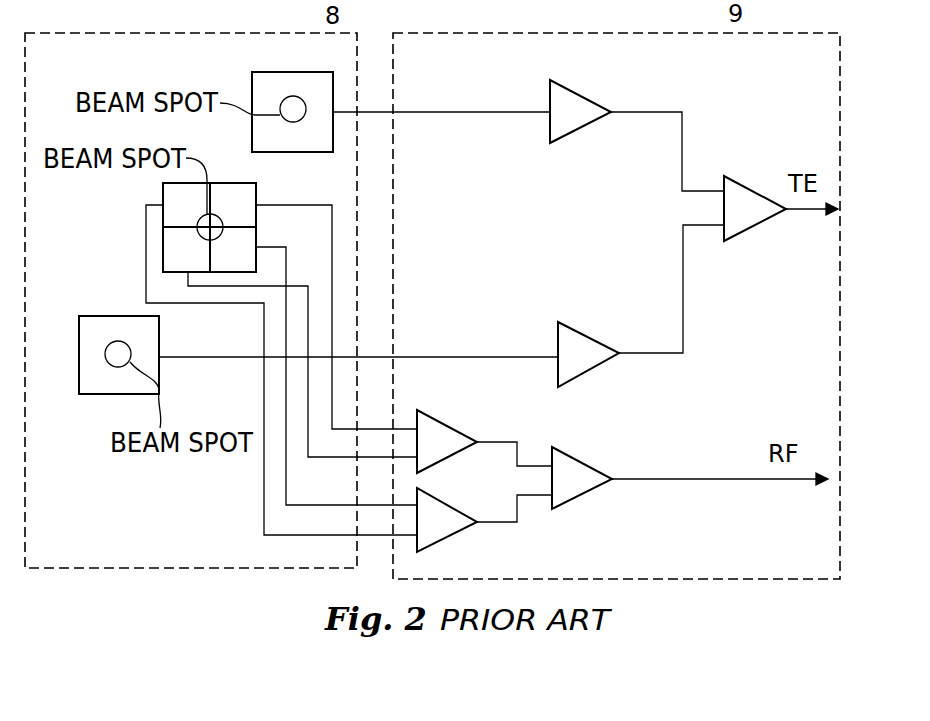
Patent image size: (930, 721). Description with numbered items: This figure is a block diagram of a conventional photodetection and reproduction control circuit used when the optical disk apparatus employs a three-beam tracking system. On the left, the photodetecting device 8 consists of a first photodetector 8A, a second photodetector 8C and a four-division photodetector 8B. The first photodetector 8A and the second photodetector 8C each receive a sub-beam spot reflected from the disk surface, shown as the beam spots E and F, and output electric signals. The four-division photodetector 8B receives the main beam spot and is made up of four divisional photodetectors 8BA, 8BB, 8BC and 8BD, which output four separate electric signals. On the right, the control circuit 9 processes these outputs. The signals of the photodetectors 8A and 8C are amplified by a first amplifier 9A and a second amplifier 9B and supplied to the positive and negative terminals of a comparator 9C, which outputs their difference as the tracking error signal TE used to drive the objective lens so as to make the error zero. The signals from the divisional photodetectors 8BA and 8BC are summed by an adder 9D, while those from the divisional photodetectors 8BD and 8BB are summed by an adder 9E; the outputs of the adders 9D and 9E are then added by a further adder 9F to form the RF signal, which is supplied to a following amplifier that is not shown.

The photodetecting device 8 is at (322, 11).
The photodetection and reproduction control circuit 9 is at (724, 10).
The first photodetector 8A is at (268, 72).
The 4-division photodetector 8B is at (196, 227).
The divisional photodetector 8BA is at (242, 181).
The divisional photodetector 8BB is at (168, 181).
The divisional photodetector 8BC is at (162, 250).
The divisional photodetector 8BD is at (258, 253).
The second photodetector 8C is at (145, 395).
The first amplifier 9A is at (563, 83).
The second amplifier 9B is at (585, 308).
The comparator 9C is at (730, 182).
The adder 9D is at (430, 417).
The adder 9E is at (440, 495).
The adder 9F is at (573, 431).